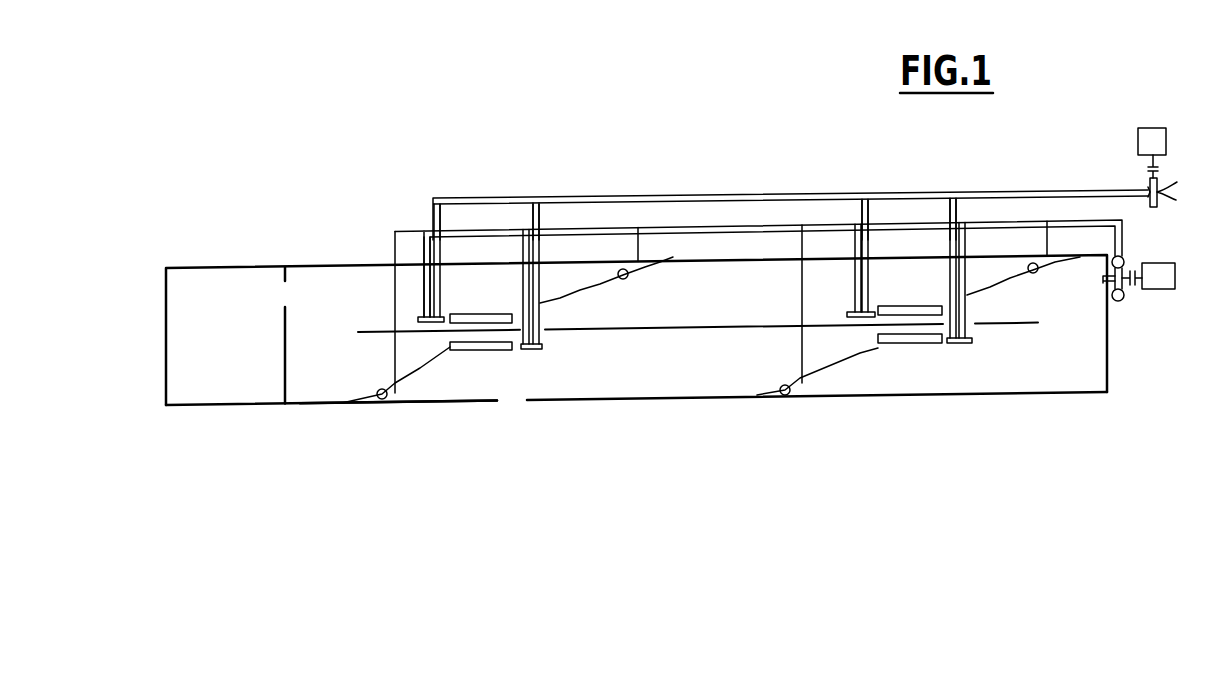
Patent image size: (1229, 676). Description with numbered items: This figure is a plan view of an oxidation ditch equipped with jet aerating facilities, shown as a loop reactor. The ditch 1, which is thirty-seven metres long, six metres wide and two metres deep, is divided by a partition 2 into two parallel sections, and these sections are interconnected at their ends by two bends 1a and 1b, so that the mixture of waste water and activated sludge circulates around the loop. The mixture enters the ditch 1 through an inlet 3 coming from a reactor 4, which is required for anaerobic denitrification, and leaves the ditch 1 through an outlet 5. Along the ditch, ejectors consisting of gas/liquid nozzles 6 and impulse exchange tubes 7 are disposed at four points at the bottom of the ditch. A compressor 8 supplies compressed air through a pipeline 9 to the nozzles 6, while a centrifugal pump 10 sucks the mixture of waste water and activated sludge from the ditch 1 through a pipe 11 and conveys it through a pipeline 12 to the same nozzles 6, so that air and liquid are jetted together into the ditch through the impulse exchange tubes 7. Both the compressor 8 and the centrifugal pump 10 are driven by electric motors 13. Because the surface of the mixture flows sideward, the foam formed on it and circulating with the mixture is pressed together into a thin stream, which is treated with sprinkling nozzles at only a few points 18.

The ditch 1 is at (643, 388).
The bend 1a is at (306, 372).
The bend 1b is at (1062, 352).
The partition 2 is at (370, 337).
The inlet 3 is at (283, 293).
The reactor 4 is at (209, 292).
The outlet 5 is at (512, 402).
The gas/liquid nozzle 6 is at (418, 317).
The impulse exchange tube 7 is at (482, 318).
The compressor 8 is at (1162, 185).
The pipeline 9 is at (776, 195).
The centrifugal pump 10 is at (1124, 298).
The pipe 11 is at (1113, 306).
The pipeline 12 is at (720, 228).
The electric motor 13 is at (1150, 137).
The points 18 is at (627, 278).